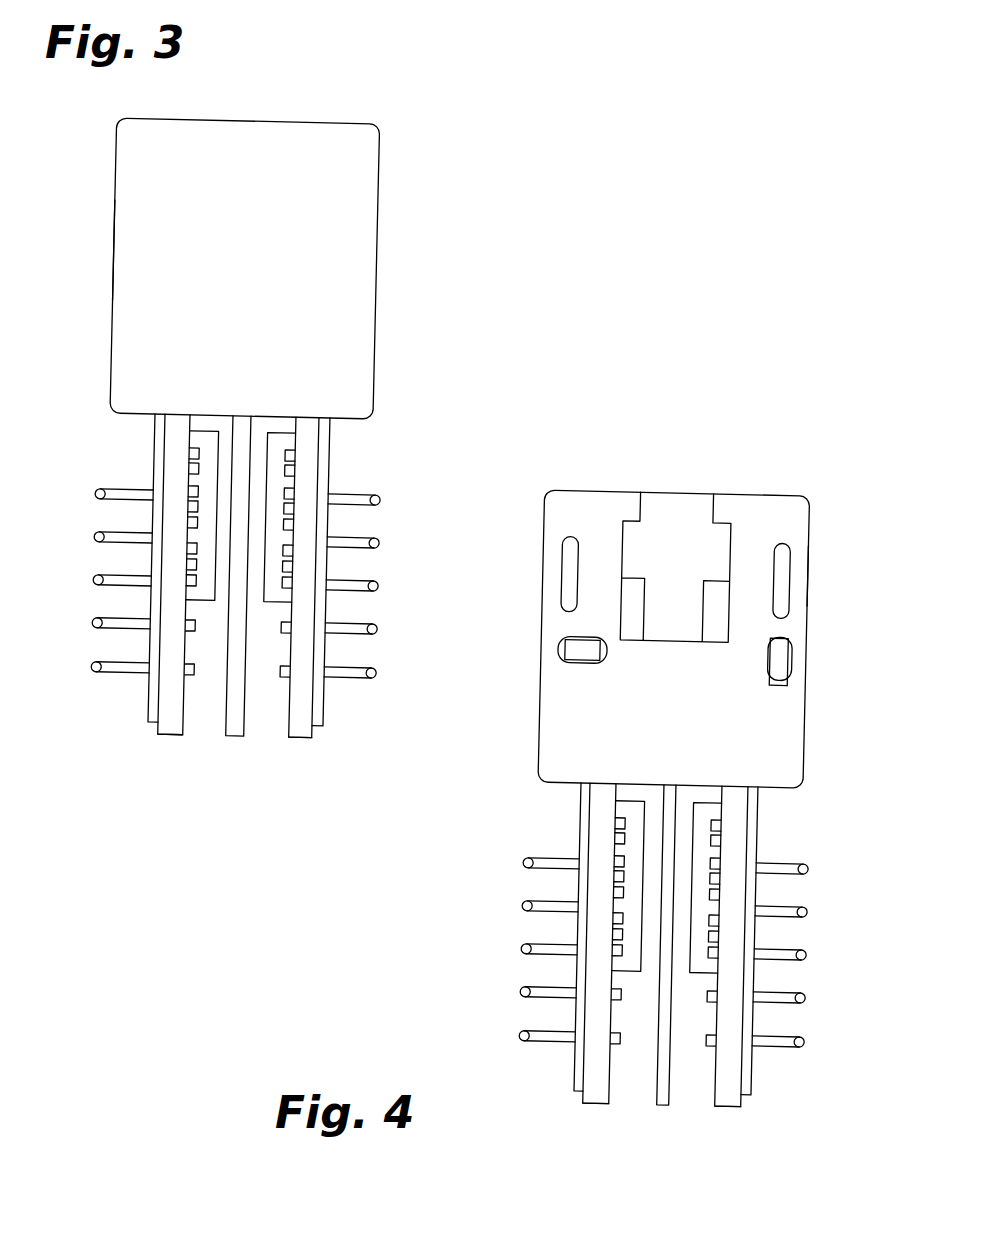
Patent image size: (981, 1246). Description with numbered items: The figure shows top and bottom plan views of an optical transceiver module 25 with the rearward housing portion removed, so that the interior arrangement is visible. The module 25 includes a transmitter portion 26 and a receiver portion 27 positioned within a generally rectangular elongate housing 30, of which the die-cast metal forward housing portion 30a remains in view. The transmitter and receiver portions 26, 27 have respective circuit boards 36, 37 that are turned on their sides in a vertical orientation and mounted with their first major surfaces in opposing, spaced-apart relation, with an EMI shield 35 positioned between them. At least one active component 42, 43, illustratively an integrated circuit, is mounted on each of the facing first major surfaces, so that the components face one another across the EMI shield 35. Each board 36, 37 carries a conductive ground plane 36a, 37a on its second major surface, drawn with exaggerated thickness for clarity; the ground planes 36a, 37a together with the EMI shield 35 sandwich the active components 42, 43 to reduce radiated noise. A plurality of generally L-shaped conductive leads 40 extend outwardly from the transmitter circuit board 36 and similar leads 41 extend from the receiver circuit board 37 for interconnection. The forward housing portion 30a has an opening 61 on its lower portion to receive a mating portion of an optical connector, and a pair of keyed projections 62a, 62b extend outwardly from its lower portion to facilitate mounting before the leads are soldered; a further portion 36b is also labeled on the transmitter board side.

In FIG. 3, the optical transceiver module 25 is at (257, 234).
In FIG. 4, the optical transceiver module 25 is at (704, 601).
In FIG. 3, the transmitter portion 26 is at (163, 745).
In FIG. 4, the transmitter portion 26 is at (725, 1110).
In FIG. 3, the receiver portion 27 is at (300, 745).
In FIG. 4, the receiver portion 27 is at (600, 1107).
In FIG. 3, the housing 30 is at (380, 263).
In FIG. 4, the housing 30 is at (582, 487).
In FIG. 3, the forward housing portion 30a is at (125, 227).
In FIG. 4, the forward housing portion 30a is at (810, 577).
In FIG. 3, the EMI shield 35 is at (236, 722).
In FIG. 4, the EMI shield 35 is at (663, 1093).
In FIG. 3, the transmitter circuit board 36 is at (172, 705).
In FIG. 4, the transmitter circuit board 36 is at (732, 1087).
In FIG. 3, the ground plane 36a is at (147, 603).
In FIG. 4, the first board outer portion 36b is at (752, 935).
In FIG. 3, the receiver circuit board 37 is at (302, 716).
In FIG. 4, the receiver circuit board 37 is at (600, 1075).
In FIG. 3, the ground plane 37a is at (327, 563).
In FIG. 4, the ground plane 37a is at (573, 973).
In FIG. 3, the conductive leads 40 is at (98, 580).
In FIG. 4, the conductive leads 40 is at (797, 913).
In FIG. 3, the conductive leads 41 is at (370, 542).
In FIG. 4, the conductive leads 41 is at (525, 950).
In FIG. 3, the active component 42 is at (200, 455).
In FIG. 4, the active component 42 is at (707, 825).
In FIG. 3, the active component 43 is at (282, 455).
In FIG. 4, the active component 43 is at (627, 823).
In FIG. 4, the opening 61 is at (675, 520).
In FIG. 4, the keyed projection 62a is at (782, 637).
In FIG. 4, the keyed projection 62b is at (558, 650).